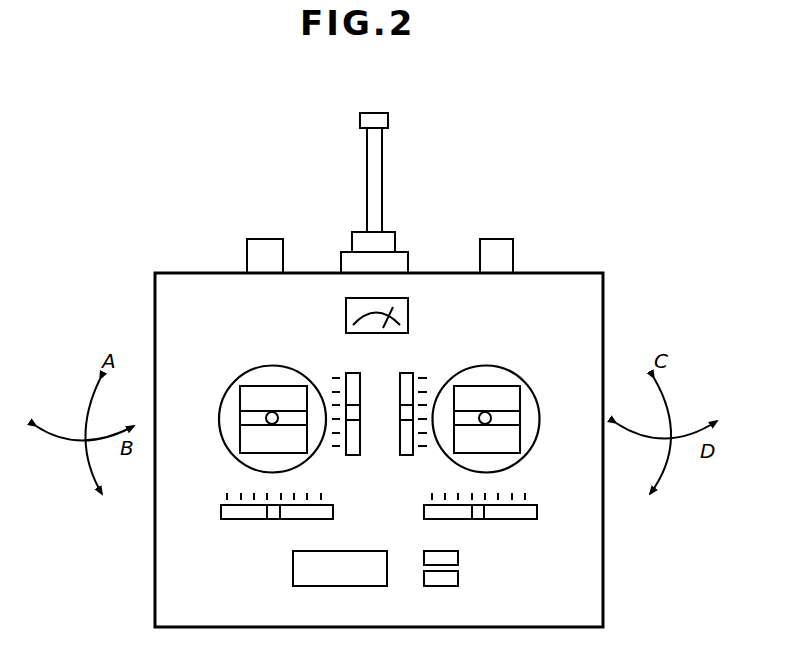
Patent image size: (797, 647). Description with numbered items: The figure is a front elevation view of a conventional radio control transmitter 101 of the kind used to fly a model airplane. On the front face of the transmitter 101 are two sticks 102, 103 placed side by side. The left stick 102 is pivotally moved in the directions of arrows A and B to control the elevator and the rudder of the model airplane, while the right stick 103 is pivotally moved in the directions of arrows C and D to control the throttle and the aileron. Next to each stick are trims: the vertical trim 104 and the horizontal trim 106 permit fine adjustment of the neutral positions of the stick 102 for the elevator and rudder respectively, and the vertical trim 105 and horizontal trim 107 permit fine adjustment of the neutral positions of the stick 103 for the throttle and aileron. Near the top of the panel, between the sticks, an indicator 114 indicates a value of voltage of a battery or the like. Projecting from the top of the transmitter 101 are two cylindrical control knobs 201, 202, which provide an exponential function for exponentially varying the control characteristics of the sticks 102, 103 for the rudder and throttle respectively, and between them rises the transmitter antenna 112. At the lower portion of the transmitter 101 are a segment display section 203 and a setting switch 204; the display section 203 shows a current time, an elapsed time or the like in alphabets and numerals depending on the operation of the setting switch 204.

The transmitter 101 is at (155, 597).
The transmitter antenna 112 is at (388, 153).
The indicator 114 is at (409, 310).
The stick 102 is at (270, 414).
The stick 103 is at (488, 414).
The trim 104 is at (350, 407).
The trim 105 is at (407, 407).
The trim 106 is at (272, 518).
The trim 107 is at (480, 511).
The cylindrical control knob 201 is at (264, 236).
The cylindrical control knob 202 is at (491, 236).
The segment display section 203 is at (292, 575).
The setting switch 204 is at (459, 578).